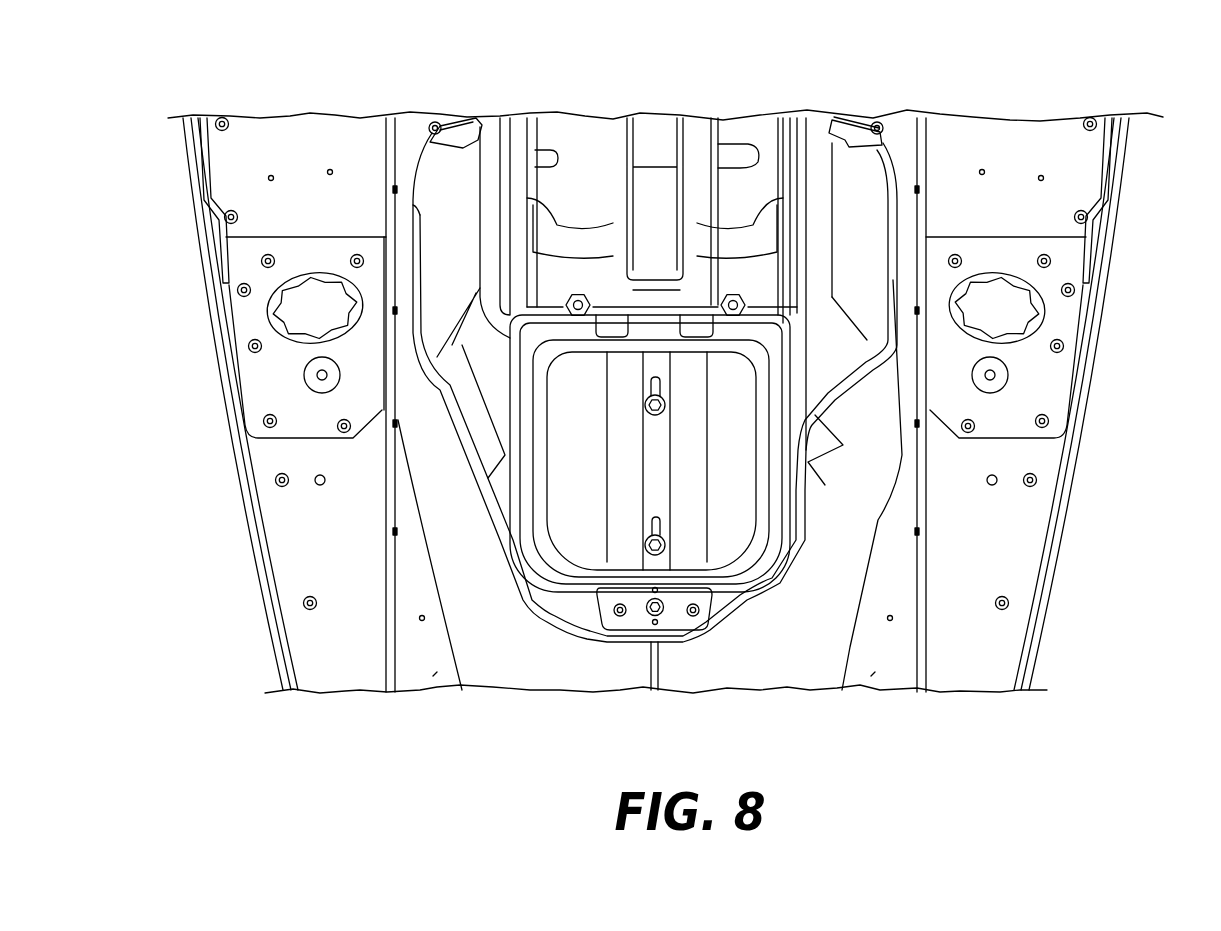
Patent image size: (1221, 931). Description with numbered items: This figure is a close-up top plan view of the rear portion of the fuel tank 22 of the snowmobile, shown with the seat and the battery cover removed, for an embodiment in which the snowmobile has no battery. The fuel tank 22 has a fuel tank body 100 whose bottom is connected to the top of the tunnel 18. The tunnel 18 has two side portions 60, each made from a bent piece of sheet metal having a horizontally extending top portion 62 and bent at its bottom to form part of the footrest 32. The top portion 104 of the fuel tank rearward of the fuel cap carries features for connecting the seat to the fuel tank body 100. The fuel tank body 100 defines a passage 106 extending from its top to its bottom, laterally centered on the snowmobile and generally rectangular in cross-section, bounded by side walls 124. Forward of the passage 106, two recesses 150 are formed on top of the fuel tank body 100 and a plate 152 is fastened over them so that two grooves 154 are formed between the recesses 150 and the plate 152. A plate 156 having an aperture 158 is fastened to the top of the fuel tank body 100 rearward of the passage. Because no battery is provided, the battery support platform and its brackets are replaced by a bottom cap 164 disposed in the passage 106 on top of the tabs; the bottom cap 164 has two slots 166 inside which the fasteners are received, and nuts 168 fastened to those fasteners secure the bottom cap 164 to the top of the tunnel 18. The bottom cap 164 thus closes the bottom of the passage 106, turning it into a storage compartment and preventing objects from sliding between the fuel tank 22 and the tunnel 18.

The tunnel 18 is at (398, 185).
The fuel tank 22 is at (718, 168).
The footrest 32 is at (305, 545).
The side portion 60 is at (389, 668).
The top portion 62 is at (436, 672).
The fuel tank body 100 is at (413, 458).
The top portion 104 is at (553, 190).
The passage 106 is at (794, 332).
The side walls 124 is at (517, 410).
The recesses 150 is at (590, 292).
The plate 152 is at (616, 318).
The grooves 154 is at (690, 320).
The plate 156 is at (630, 620).
The aperture 158 is at (665, 612).
The bottom cap 164 is at (750, 498).
The slots 166 is at (662, 387).
The nuts 168 is at (665, 407).